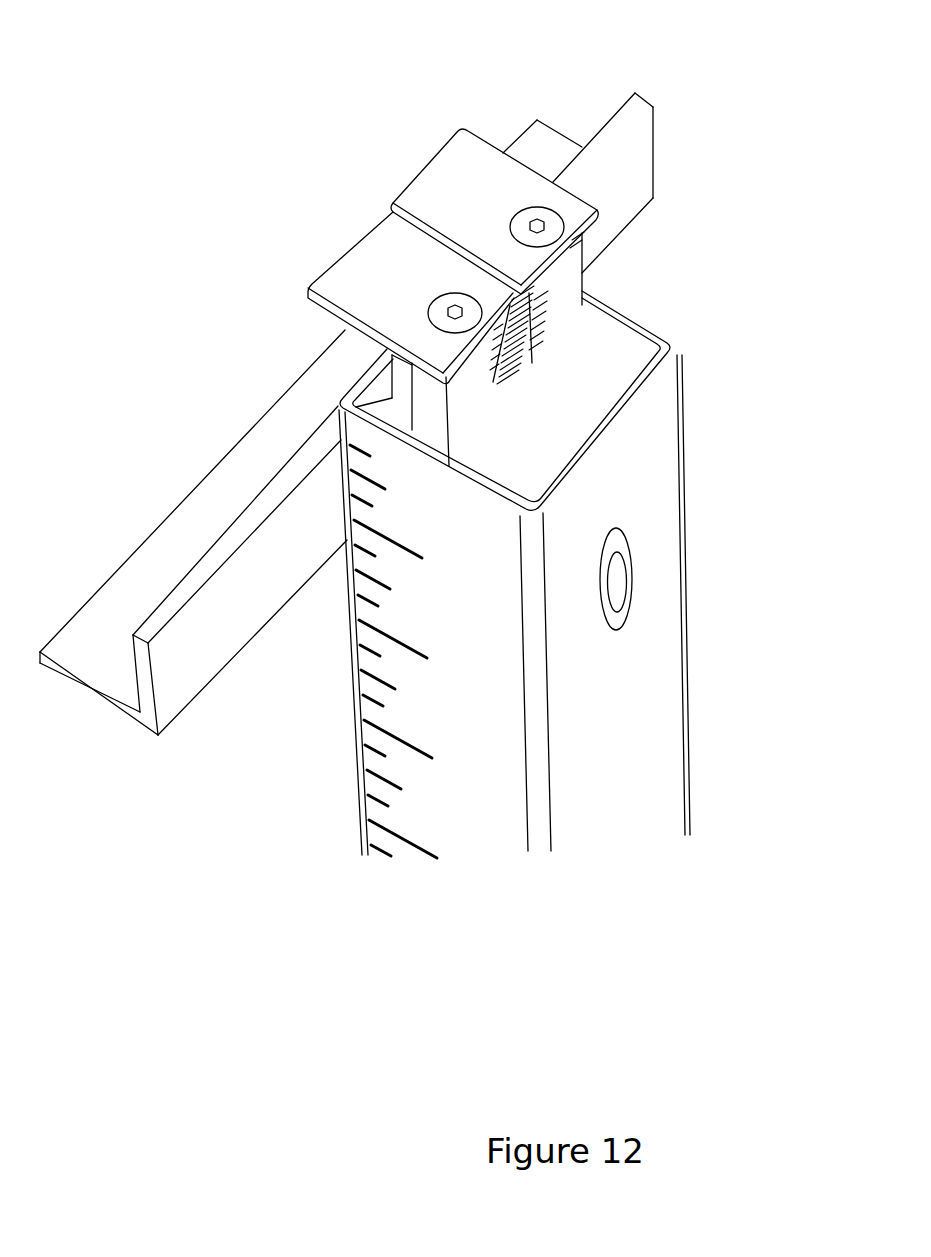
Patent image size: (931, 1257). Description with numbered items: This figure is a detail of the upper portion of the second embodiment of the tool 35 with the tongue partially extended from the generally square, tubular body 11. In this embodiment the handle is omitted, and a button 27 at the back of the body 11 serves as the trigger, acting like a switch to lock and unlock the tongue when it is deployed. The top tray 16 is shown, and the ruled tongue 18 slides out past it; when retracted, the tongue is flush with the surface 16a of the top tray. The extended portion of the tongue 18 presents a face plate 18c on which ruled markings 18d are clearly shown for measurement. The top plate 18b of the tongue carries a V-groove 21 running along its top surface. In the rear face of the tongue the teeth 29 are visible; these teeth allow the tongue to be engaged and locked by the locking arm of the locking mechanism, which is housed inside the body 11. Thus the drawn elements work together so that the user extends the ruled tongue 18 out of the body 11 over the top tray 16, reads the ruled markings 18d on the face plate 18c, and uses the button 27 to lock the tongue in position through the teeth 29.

The ruled tongue 18 is at (392, 140).
The V-groove 21 is at (405, 217).
The top plate 18b is at (352, 267).
The face plate 18c is at (572, 253).
The ruled markings 18d is at (502, 382).
The teeth 29 is at (513, 333).
The top tray 16 is at (143, 537).
The surface of the top tray 16a is at (265, 448).
The tool 35 is at (740, 502).
The tubular body 11 is at (365, 787).
The button 27 is at (615, 573).